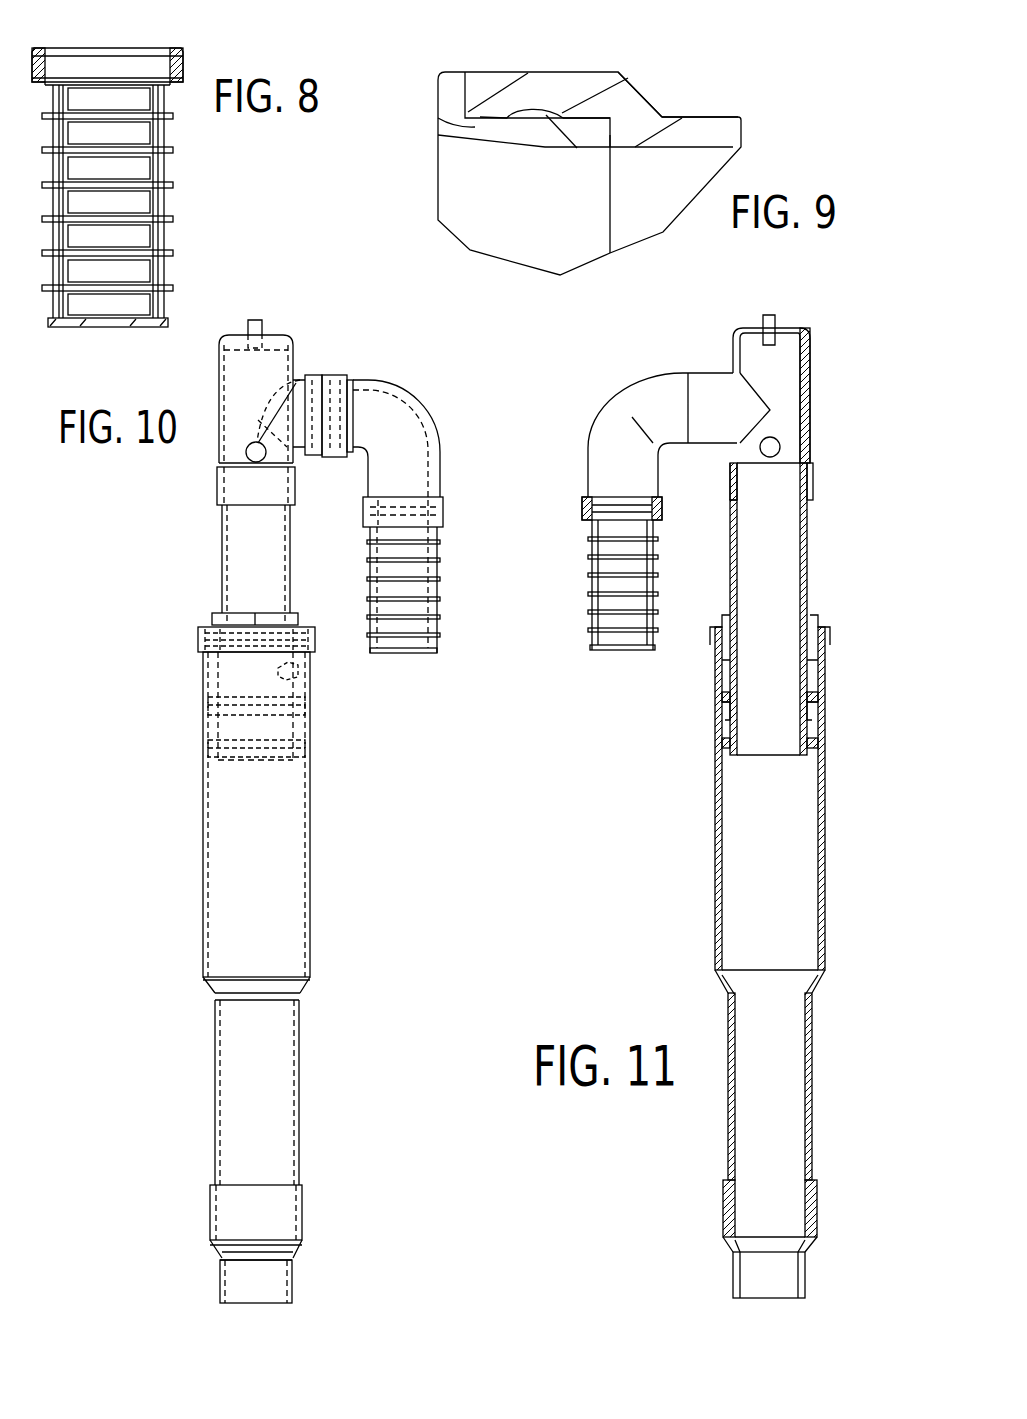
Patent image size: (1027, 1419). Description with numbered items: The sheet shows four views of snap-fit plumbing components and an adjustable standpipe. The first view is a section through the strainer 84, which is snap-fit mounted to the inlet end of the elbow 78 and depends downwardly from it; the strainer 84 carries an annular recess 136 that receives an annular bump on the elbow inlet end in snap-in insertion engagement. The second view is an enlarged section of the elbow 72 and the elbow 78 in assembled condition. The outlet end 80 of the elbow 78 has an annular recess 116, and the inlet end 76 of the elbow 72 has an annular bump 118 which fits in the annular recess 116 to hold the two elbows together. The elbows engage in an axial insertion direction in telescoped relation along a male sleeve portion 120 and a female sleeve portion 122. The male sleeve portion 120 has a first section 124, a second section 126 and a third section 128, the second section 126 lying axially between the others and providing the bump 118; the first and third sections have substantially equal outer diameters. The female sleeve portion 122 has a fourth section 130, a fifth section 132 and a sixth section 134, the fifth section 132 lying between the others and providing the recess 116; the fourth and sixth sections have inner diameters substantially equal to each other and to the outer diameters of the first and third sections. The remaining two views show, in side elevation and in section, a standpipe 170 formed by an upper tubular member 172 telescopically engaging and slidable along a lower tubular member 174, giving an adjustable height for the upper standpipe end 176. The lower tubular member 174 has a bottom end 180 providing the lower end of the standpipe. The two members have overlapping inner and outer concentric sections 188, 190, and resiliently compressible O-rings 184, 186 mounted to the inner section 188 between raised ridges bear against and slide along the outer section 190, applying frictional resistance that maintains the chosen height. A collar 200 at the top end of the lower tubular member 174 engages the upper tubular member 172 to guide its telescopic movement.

In FIG. 8, the annular recess 136 is at (172, 61).
In FIG. 8, the strainer 84 is at (174, 148).
In FIG. 9, the elbow 72 is at (438, 95).
In FIG. 9, the outlet end 80 is at (477, 87).
In FIG. 9, the sixth section 134 is at (480, 117).
In FIG. 9, the annular recess 116 is at (533, 107).
In FIG. 9, the fifth section 132 is at (562, 113).
In FIG. 9, the female sleeve portion 122 is at (617, 70).
In FIG. 9, the fourth section 130 is at (625, 86).
In FIG. 9, the elbow 78 is at (723, 117).
In FIG. 9, the inlet end 76 is at (609, 136).
In FIG. 9, the third section 128 is at (477, 127).
In FIG. 9, the second section 126 is at (505, 120).
In FIG. 9, the annular bump 118 is at (547, 133).
In FIG. 9, the first section 124 is at (577, 138).
In FIG. 9, the male sleeve portion 120 is at (592, 140).
In FIG. 10, the standpipe 170 is at (196, 600).
In FIG. 11, the standpipe 170 is at (706, 600).
In FIG. 10, the upper standpipe end 176 is at (215, 487).
In FIG. 11, the upper standpipe end 176 is at (731, 483).
In FIG. 10, the upper tubular member 172 is at (221, 557).
In FIG. 11, the upper tubular member 172 is at (731, 558).
In FIG. 10, the collar 200 is at (198, 637).
In FIG. 10, the inner concentric section 188 is at (300, 666).
In FIG. 11, the inner concentric section 188 is at (740, 687).
In FIG. 10, the O-ring 184 is at (311, 705).
In FIG. 11, the O-ring 184 is at (721, 697).
In FIG. 10, the O-ring 186 is at (311, 748).
In FIG. 11, the O-ring 186 is at (720, 743).
In FIG. 10, the outer concentric section 190 is at (311, 803).
In FIG. 11, the outer concentric section 190 is at (714, 827).
In FIG. 10, the lower tubular member 174 is at (203, 952).
In FIG. 11, the lower tubular member 174 is at (714, 948).
In FIG. 10, the bottom end 180 is at (210, 1215).
In FIG. 11, the bottom end 180 is at (722, 1200).